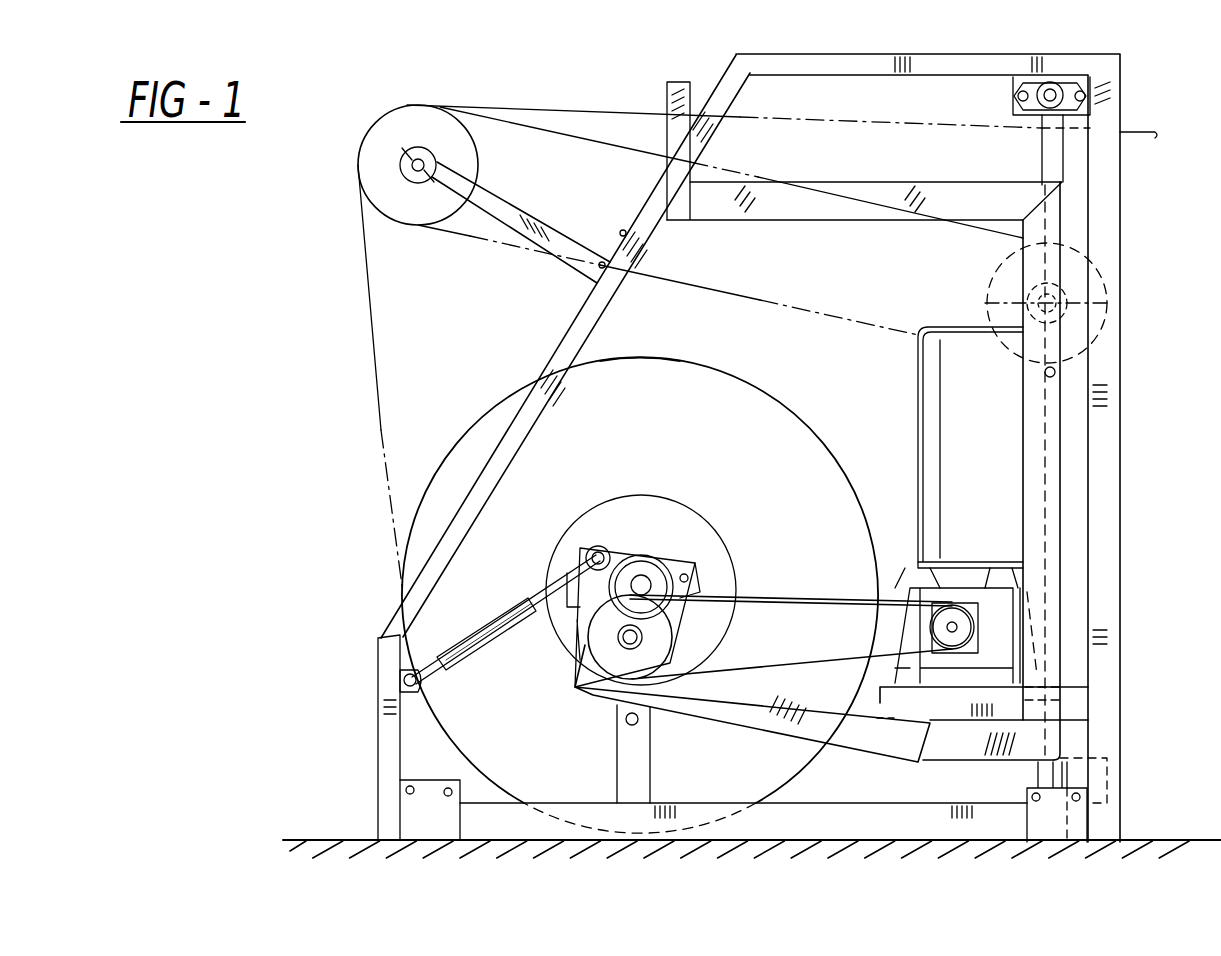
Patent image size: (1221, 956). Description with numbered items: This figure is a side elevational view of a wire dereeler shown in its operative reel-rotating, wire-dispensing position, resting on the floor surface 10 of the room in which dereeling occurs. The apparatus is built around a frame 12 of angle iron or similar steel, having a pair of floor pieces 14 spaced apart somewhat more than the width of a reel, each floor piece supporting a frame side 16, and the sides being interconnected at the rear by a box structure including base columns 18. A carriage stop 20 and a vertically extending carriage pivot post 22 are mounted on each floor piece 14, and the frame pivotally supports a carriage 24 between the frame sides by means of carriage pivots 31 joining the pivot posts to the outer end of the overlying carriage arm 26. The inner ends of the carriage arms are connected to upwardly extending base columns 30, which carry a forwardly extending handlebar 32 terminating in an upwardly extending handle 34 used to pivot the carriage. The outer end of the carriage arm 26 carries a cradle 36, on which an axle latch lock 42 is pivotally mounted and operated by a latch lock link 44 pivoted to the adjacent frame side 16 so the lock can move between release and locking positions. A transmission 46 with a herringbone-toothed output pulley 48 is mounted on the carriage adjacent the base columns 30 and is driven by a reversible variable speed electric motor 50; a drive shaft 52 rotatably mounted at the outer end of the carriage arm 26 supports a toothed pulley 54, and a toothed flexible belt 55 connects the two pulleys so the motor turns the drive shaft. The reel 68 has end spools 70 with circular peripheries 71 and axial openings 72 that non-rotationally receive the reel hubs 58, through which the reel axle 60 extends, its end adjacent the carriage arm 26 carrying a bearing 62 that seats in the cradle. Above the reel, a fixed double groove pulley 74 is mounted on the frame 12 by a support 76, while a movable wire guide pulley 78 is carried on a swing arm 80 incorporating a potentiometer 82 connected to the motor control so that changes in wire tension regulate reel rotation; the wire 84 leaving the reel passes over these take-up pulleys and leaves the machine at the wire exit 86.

The floor surface 10 is at (326, 835).
The frame 12 is at (1118, 237).
The floor pieces 14 is at (830, 830).
The frame side 16 is at (560, 348).
The base columns 18 is at (1115, 462).
The carriage stop 20 is at (1040, 790).
The carriage pivot post 22 is at (640, 770).
The carriage 24 is at (886, 758).
The carriage arm 26 is at (745, 705).
The base columns 30 is at (1050, 605).
The carriage pivots 31 is at (625, 725).
The handlebar 32 is at (805, 213).
The handle 34 is at (668, 98).
The cradle 36 is at (560, 640).
The axle latch lock 42 is at (598, 545).
The latch lock link 44 is at (468, 645).
The transmission 46 is at (1012, 580).
The output pulley 48 is at (948, 597).
The electric motor 50 is at (996, 444).
The drive shaft 52 is at (650, 640).
The toothed pulley 54 is at (620, 690).
The toothed flexible belt 55 is at (778, 600).
The reel hubs 58 is at (700, 510).
The reel axle 60 is at (655, 520).
The bearing 62 is at (640, 520).
The reel 68 is at (818, 424).
The end spools 70 is at (728, 372).
The circular peripheries 71 is at (648, 357).
The axial openings 72 is at (735, 560).
The fixed double groove pulley 74 is at (418, 212).
The support 76 is at (516, 228).
The movable wire guide pulley 78 is at (990, 303).
The swing arm 80 is at (1042, 165).
The potentiometer 82 is at (1040, 92).
The wire 84 is at (368, 365).
The wire exit 86 is at (1135, 130).